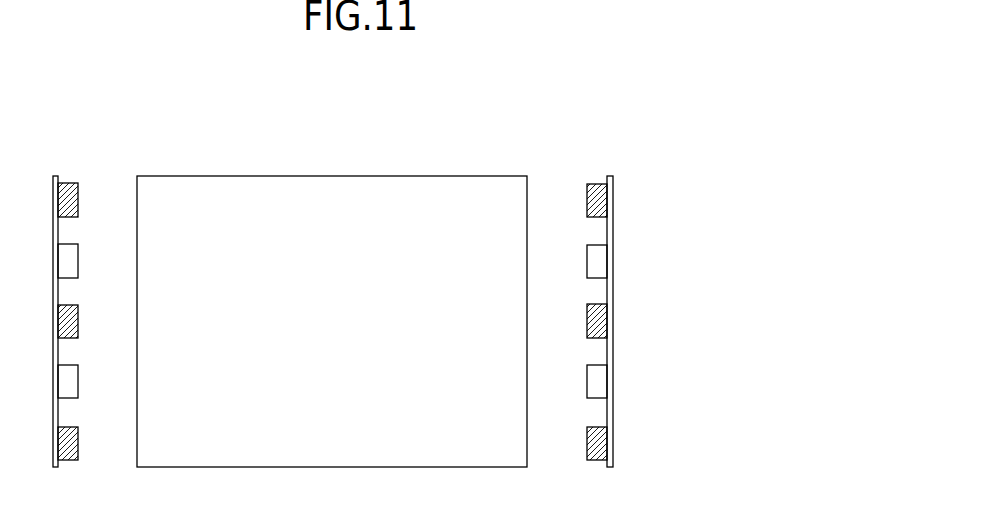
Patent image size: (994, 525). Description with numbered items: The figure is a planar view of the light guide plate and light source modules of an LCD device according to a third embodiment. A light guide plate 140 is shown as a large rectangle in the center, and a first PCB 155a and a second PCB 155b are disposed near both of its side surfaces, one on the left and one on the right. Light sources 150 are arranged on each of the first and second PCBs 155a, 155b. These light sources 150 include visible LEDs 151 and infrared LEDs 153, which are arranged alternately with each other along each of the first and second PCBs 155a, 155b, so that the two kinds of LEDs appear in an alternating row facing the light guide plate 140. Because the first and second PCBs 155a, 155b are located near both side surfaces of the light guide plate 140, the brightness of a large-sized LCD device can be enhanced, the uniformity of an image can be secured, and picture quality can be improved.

The light guide plate 140 is at (338, 183).
The light sources 150 is at (332, 264).
The visible LEDs 151 is at (72, 259).
The infrared LEDs 153 is at (80, 197).
The first PCB 155a is at (53, 195).
The second PCB 155b is at (613, 195).